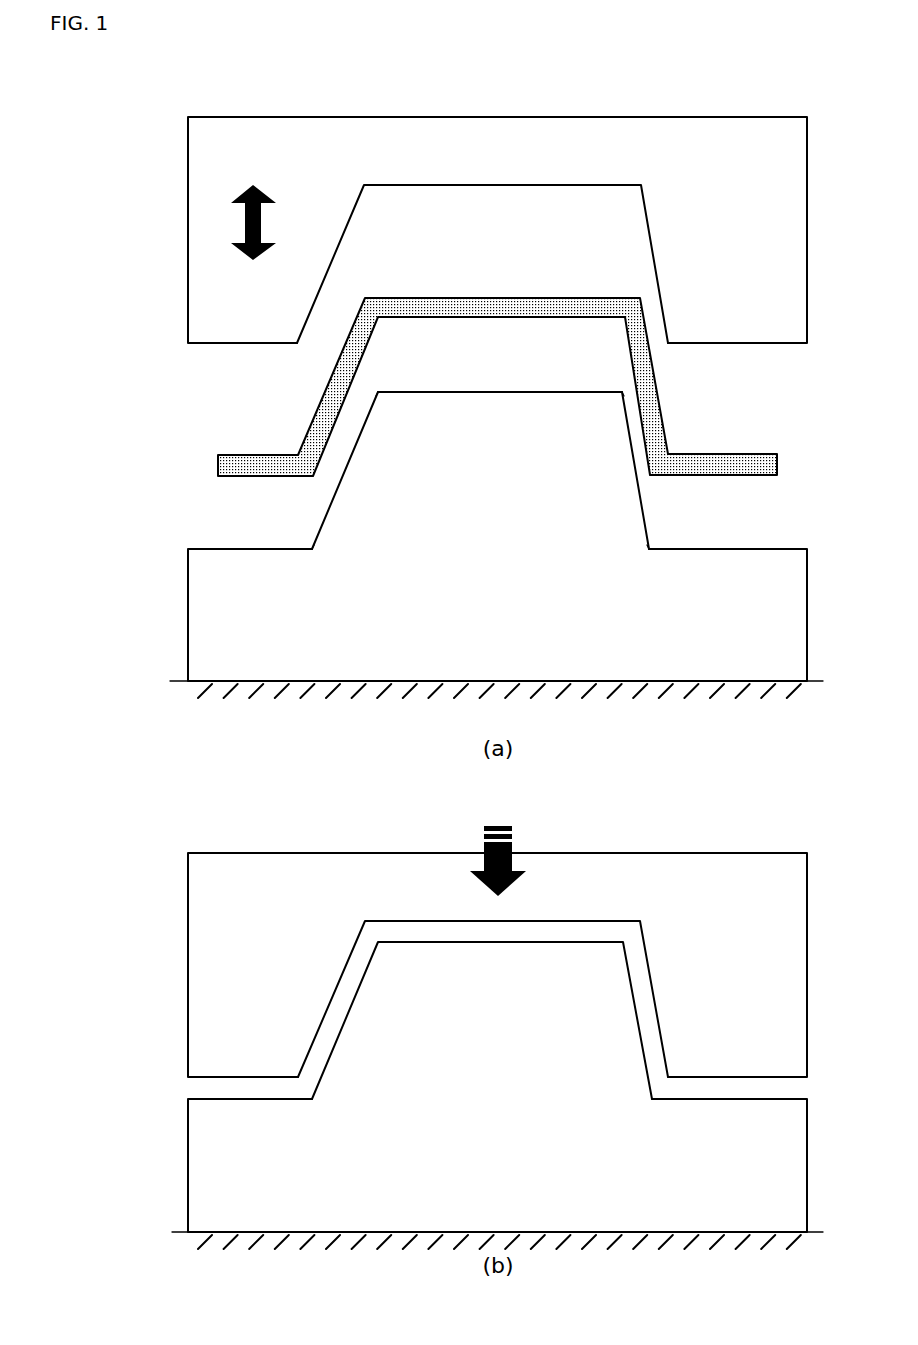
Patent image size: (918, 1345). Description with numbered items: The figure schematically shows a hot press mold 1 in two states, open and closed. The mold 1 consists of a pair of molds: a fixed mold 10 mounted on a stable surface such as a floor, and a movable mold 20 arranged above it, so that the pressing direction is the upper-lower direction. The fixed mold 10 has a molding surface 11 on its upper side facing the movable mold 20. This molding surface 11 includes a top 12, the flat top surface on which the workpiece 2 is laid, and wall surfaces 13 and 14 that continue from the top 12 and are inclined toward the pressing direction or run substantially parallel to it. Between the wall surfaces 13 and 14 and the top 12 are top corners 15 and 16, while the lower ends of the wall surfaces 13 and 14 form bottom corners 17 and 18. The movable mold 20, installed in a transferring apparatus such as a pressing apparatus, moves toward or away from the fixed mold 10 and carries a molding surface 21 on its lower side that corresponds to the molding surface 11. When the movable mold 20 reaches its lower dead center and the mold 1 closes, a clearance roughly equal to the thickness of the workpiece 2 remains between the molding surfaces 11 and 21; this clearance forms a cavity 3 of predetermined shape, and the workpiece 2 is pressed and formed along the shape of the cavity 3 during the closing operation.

The mold 1 is at (125, 439).
The workpiece 2 is at (218, 463).
The cavity 3 is at (196, 1092).
The fixed mold 10 is at (455, 775).
The molding surface 11 is at (478, 709).
The top 12 is at (458, 392).
The wall surface 13 is at (330, 507).
The wall surface 14 is at (642, 507).
The top corner 15 is at (385, 396).
The top corner 16 is at (615, 397).
The bottom corner 17 is at (318, 552).
The bottom corner 18 is at (645, 552).
The movable mold 20 is at (455, 597).
The molding surface 21 is at (485, 222).